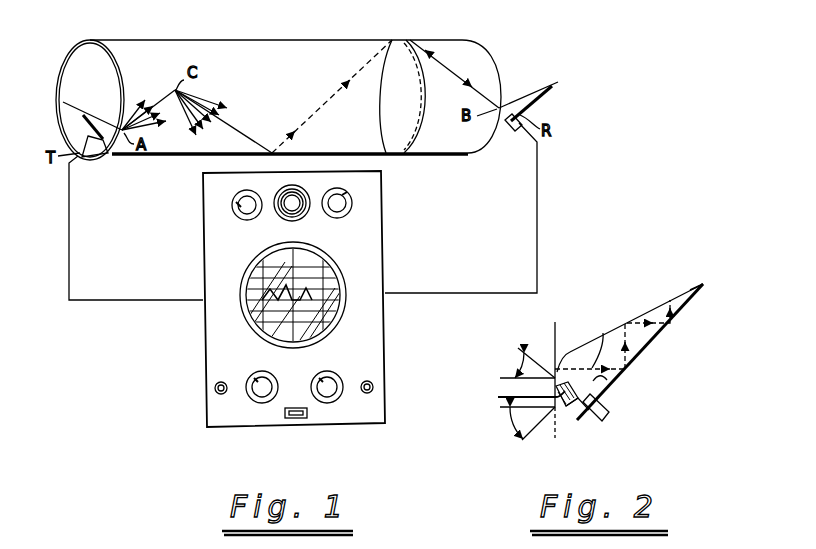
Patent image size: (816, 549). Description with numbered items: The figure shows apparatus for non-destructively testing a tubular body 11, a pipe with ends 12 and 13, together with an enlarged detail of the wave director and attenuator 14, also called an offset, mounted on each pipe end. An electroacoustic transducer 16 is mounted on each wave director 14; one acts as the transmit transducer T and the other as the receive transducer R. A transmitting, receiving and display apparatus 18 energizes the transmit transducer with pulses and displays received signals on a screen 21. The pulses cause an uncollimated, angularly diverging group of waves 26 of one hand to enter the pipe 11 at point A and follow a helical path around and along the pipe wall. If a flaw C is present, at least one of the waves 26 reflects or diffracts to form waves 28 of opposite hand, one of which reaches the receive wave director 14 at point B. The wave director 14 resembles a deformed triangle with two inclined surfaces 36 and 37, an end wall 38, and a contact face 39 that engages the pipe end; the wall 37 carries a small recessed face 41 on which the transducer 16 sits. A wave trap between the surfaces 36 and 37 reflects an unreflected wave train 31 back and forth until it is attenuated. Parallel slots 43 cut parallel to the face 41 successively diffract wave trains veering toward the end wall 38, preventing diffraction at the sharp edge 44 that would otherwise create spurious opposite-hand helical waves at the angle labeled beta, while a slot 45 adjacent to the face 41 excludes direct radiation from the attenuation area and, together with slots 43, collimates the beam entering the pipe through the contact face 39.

In FIG. 1, the tubular body 11 is at (432, 40).
In FIG. 1, the end of pipe 12 is at (64, 70).
In FIG. 1, the end of pipe 13 is at (502, 80).
In FIG. 1, the wave director and attenuator 14 is at (75, 123).
In FIG. 2, the wave director and attenuator 14 is at (640, 354).
In FIG. 1, the electroacoustic transducer 16 is at (98, 158).
In FIG. 2, the electroacoustic transducer 16 is at (609, 413).
In FIG. 1, the transmitting, receiving and display apparatus 18 is at (386, 272).
In FIG. 1, the screen 21 is at (330, 328).
In FIG. 1, the waves 26 is at (148, 125).
In FIG. 1, the reflected or diffracted waves 28 is at (212, 106).
In FIG. 2, the reflected or diffracted waves 28 is at (596, 341).
In FIG. 2, the unreflected wave train 31 is at (614, 328).
In FIG. 2, the inclined surface 36 is at (648, 313).
In FIG. 2, the inclined surface 37 is at (676, 308).
In FIG. 2, the end wall 38 is at (562, 418).
In FIG. 2, the contact face 39 is at (521, 380).
In FIG. 2, the recessed face 41 is at (592, 420).
In FIG. 2, the parallel slots 43 is at (557, 388).
In FIG. 2, the edge 44 is at (527, 431).
In FIG. 2, the slot 45 is at (611, 387).